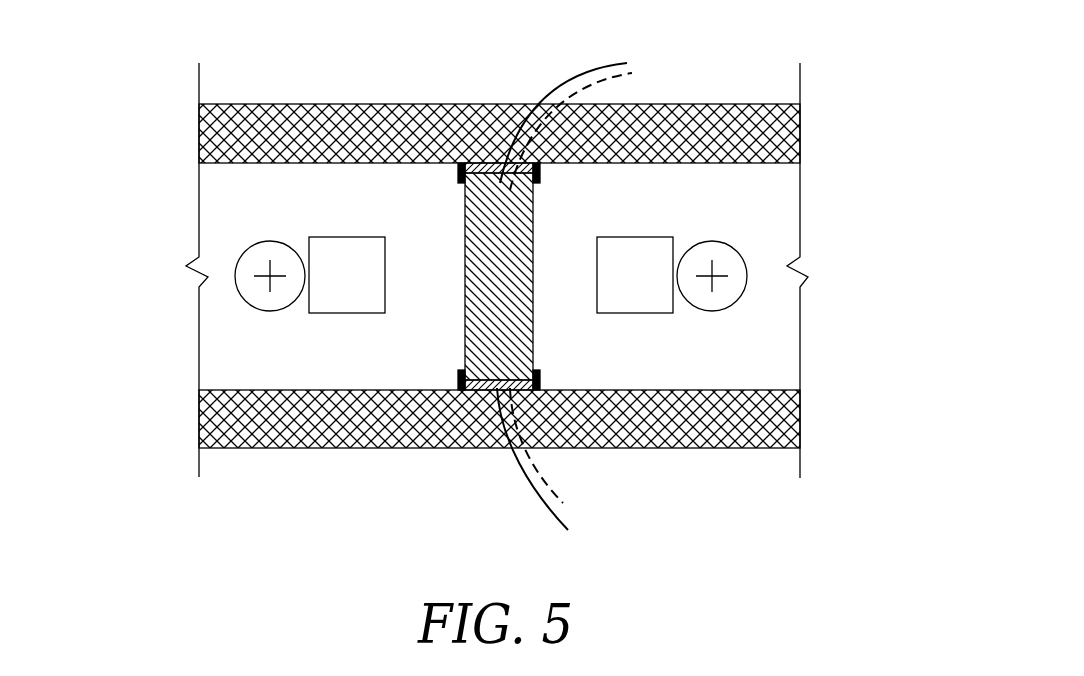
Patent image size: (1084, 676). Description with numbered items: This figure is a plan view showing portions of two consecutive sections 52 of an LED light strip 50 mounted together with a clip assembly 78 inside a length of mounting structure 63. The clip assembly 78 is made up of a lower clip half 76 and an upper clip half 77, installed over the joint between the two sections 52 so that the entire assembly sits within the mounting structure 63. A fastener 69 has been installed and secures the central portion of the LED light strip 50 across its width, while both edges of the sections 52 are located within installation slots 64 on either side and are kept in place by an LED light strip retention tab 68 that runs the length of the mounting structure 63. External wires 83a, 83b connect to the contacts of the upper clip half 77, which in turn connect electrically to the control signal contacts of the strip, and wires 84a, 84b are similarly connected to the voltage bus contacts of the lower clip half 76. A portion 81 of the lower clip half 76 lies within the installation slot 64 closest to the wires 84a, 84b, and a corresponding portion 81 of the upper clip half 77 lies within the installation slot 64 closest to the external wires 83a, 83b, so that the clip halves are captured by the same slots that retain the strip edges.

The LED light strip 50 is at (272, 205).
The section 52 is at (500, 282).
The mounting structure 63 is at (777, 131).
The installation slot 64 is at (500, 282).
The LED light strip retention tab 68 is at (500, 281).
The fastener 69 is at (250, 287).
The lower clip half 76 is at (522, 388).
The upper clip half 77 is at (508, 203).
The clip assembly 78 is at (482, 325).
The portion 81 is at (572, 282).
The external wire 83a is at (610, 76).
The external wire 83b is at (589, 64).
The wire 84a is at (564, 505).
The wire 84b is at (548, 518).